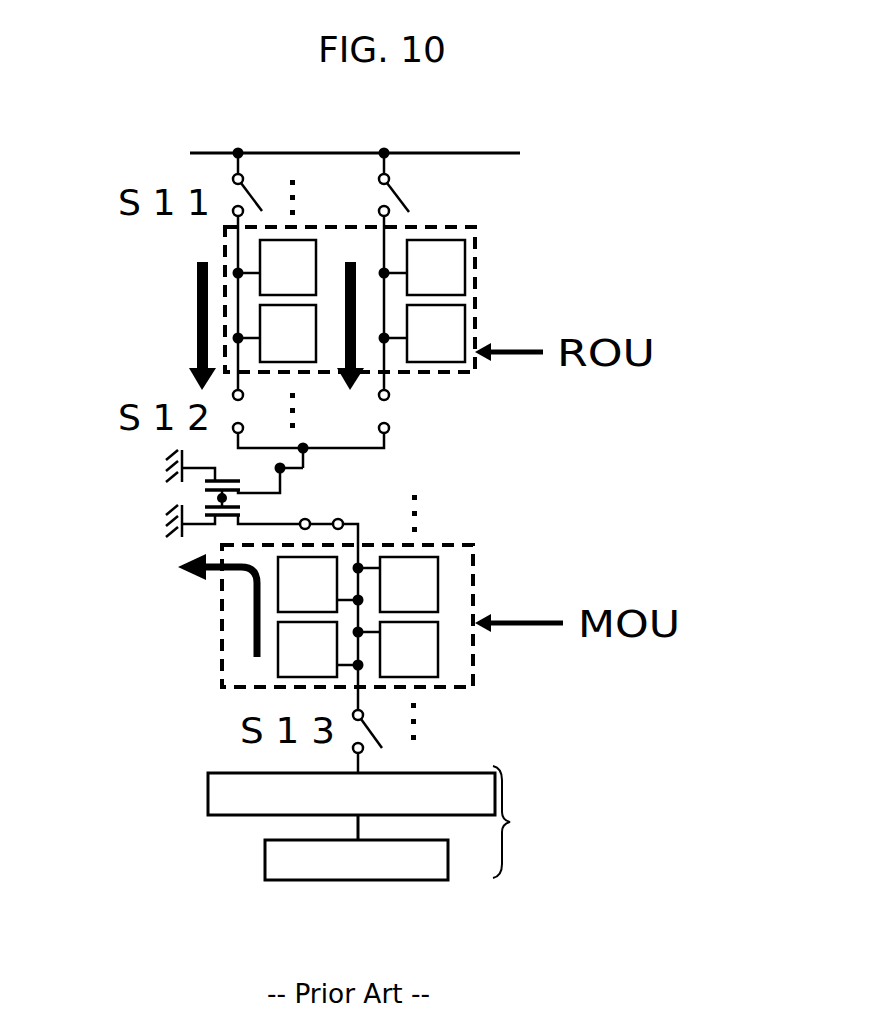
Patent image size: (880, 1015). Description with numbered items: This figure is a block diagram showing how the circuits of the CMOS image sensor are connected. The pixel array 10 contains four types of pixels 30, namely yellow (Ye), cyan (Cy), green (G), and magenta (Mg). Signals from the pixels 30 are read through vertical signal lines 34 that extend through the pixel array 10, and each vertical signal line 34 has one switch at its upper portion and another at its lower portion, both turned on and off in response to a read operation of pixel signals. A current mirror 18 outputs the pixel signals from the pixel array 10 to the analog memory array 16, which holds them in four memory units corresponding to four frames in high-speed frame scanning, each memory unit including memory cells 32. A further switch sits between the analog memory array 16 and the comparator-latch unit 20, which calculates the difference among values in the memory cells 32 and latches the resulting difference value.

The pixel array 10 is at (512, 328).
The analog memory array 16 is at (497, 570).
The current mirror 18 is at (152, 497).
The comparator-latch unit 20 is at (374, 823).
The pixels 30 is at (306, 247).
The memory cells 32 is at (430, 557).
The vertical signal lines 34 is at (230, 248).